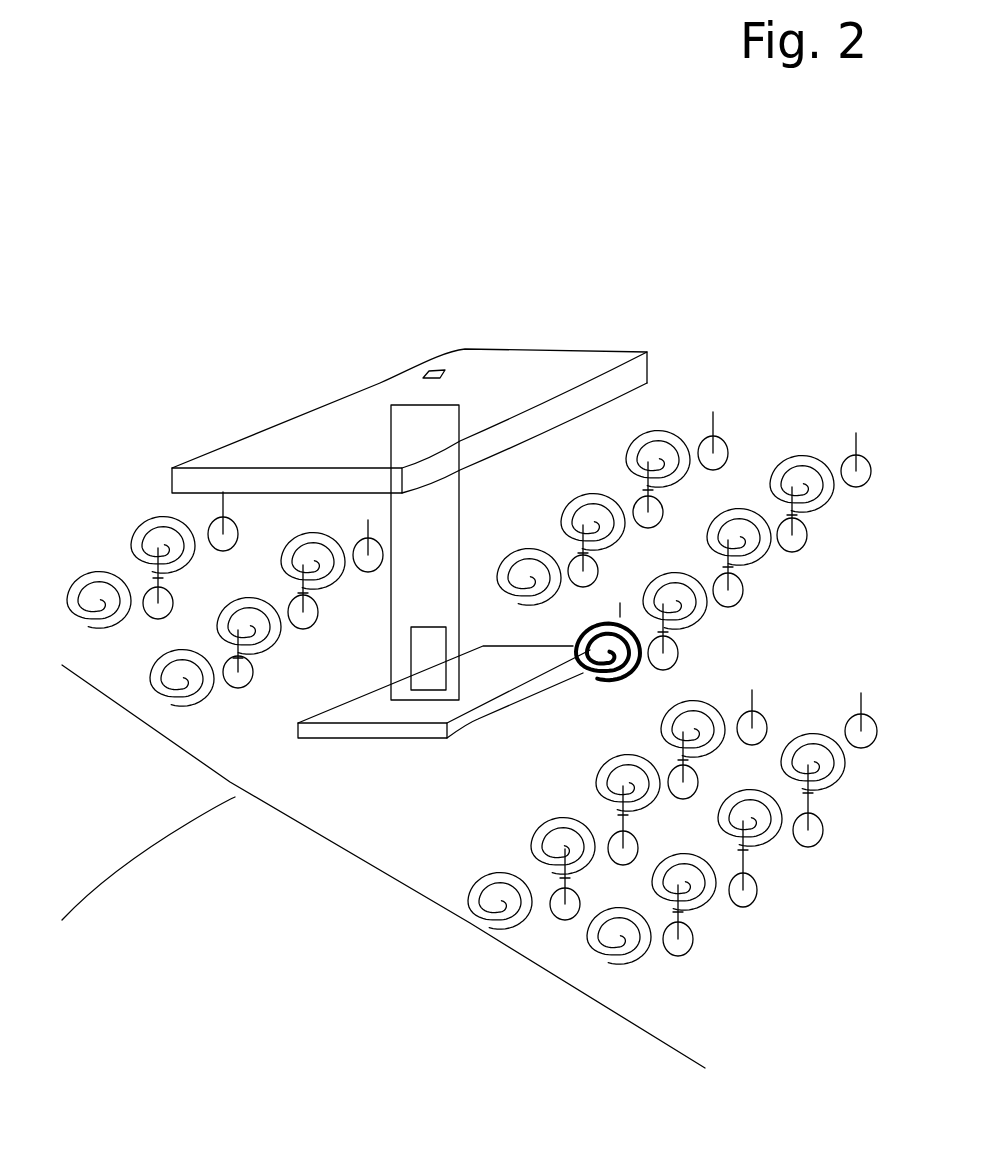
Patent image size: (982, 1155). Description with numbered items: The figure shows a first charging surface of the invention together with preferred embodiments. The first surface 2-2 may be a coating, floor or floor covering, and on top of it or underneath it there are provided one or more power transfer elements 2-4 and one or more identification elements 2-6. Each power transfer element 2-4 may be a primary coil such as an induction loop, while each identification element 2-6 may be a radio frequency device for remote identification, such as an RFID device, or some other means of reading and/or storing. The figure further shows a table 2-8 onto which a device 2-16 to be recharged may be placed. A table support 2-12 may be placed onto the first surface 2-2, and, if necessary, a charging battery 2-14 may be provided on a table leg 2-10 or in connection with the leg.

The first surface 2-2 is at (145, 830).
The power transfer element 2-4 is at (660, 420).
The identification element 2-6 is at (842, 457).
The table 2-8 is at (532, 397).
The table leg 2-10 is at (425, 552).
The table support 2-12 is at (444, 692).
The charging battery 2-14 is at (422, 638).
The device 2-16 is at (443, 378).